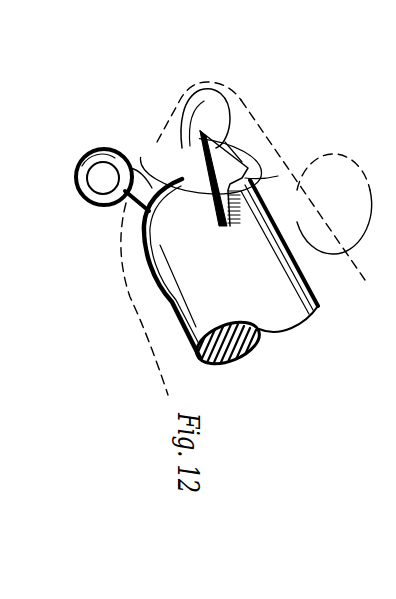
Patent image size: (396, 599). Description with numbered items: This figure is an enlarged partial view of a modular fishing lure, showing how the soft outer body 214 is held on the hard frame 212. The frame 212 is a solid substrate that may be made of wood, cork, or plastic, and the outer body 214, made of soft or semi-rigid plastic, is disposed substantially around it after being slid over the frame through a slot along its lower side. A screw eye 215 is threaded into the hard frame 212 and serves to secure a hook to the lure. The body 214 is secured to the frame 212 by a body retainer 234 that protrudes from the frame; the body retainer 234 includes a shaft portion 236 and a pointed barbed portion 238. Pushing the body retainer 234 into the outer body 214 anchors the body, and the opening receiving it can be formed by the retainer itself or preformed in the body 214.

The solid frame 212 is at (322, 251).
The soft outer body 214 is at (360, 196).
The screw eye 215 is at (123, 152).
The body retainer 234 is at (244, 172).
The shaft portion 236 is at (143, 158).
The pointed barbed portion 238 is at (278, 176).